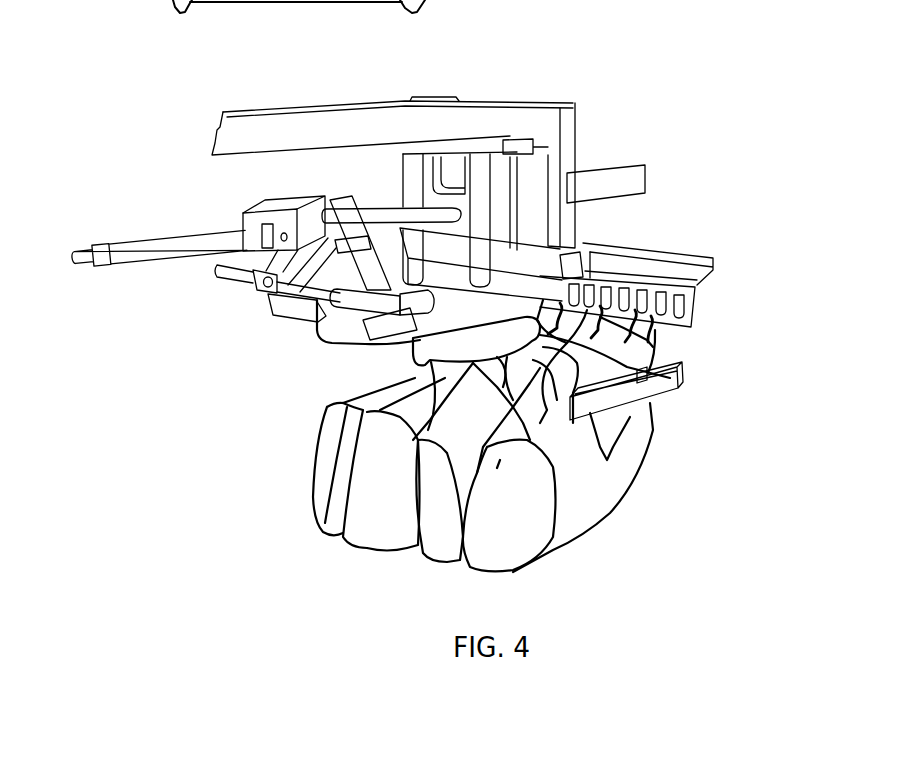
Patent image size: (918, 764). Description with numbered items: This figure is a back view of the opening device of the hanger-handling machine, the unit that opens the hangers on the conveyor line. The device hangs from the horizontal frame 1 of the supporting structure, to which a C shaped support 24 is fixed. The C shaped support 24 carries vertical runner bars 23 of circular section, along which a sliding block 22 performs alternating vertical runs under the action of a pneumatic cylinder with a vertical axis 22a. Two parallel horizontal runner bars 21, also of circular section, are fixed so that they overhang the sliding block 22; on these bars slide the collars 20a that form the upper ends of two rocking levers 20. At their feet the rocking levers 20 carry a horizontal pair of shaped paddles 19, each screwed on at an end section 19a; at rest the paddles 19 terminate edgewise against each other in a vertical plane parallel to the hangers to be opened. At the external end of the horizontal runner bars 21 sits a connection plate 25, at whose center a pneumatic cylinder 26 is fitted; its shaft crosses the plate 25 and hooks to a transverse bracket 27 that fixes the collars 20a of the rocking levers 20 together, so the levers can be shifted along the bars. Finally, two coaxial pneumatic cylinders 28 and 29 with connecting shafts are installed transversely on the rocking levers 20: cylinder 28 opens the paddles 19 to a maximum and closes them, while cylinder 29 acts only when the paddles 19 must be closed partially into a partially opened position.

The horizontal frame 1 is at (358, 113).
The shaped paddles 19 is at (327, 347).
The end section 19a is at (277, 317).
The rocking levers 20 is at (263, 300).
The collar 20a is at (332, 200).
The horizontal runner bars 21 is at (451, 217).
The sliding block 22 is at (500, 206).
The pneumatic cylinder with a vertical axis 22a is at (643, 326).
The vertical runner bars 23 is at (693, 287).
The C shaped support 24 is at (572, 160).
The connection plate 25 is at (245, 222).
The pneumatic cylinder 26 is at (120, 257).
The transverse bracket 27 is at (293, 208).
The pneumatic cylinder 28 is at (391, 288).
The pneumatic cylinder 29 is at (223, 273).